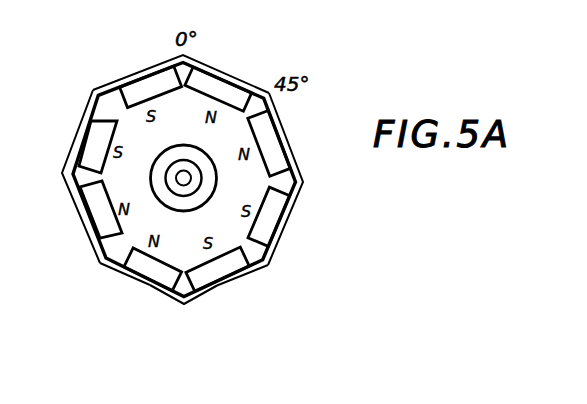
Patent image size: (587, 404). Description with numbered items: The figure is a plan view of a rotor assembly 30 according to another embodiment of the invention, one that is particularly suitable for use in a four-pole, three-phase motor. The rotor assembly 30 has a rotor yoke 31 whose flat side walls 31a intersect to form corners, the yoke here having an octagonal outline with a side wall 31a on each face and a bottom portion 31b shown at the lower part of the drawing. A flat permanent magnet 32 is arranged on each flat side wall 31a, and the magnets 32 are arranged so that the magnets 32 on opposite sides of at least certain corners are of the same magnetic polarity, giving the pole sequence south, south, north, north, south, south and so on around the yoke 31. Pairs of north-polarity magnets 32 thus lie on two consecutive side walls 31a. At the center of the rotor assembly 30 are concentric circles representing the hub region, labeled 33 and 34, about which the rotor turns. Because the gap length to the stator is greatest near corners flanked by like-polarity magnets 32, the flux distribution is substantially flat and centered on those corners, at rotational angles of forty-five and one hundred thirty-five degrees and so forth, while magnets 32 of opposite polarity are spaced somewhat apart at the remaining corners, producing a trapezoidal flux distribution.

The rotor assembly 30 is at (293, 48).
The rotor yoke 31 is at (152, 72).
The flat side wall 31a is at (81, 216).
The frame bottom portion 31b is at (184, 254).
The flat permanent magnet 32 is at (88, 120).
The shaft bearing 33 is at (191, 163).
The shaft 34 is at (183, 178).